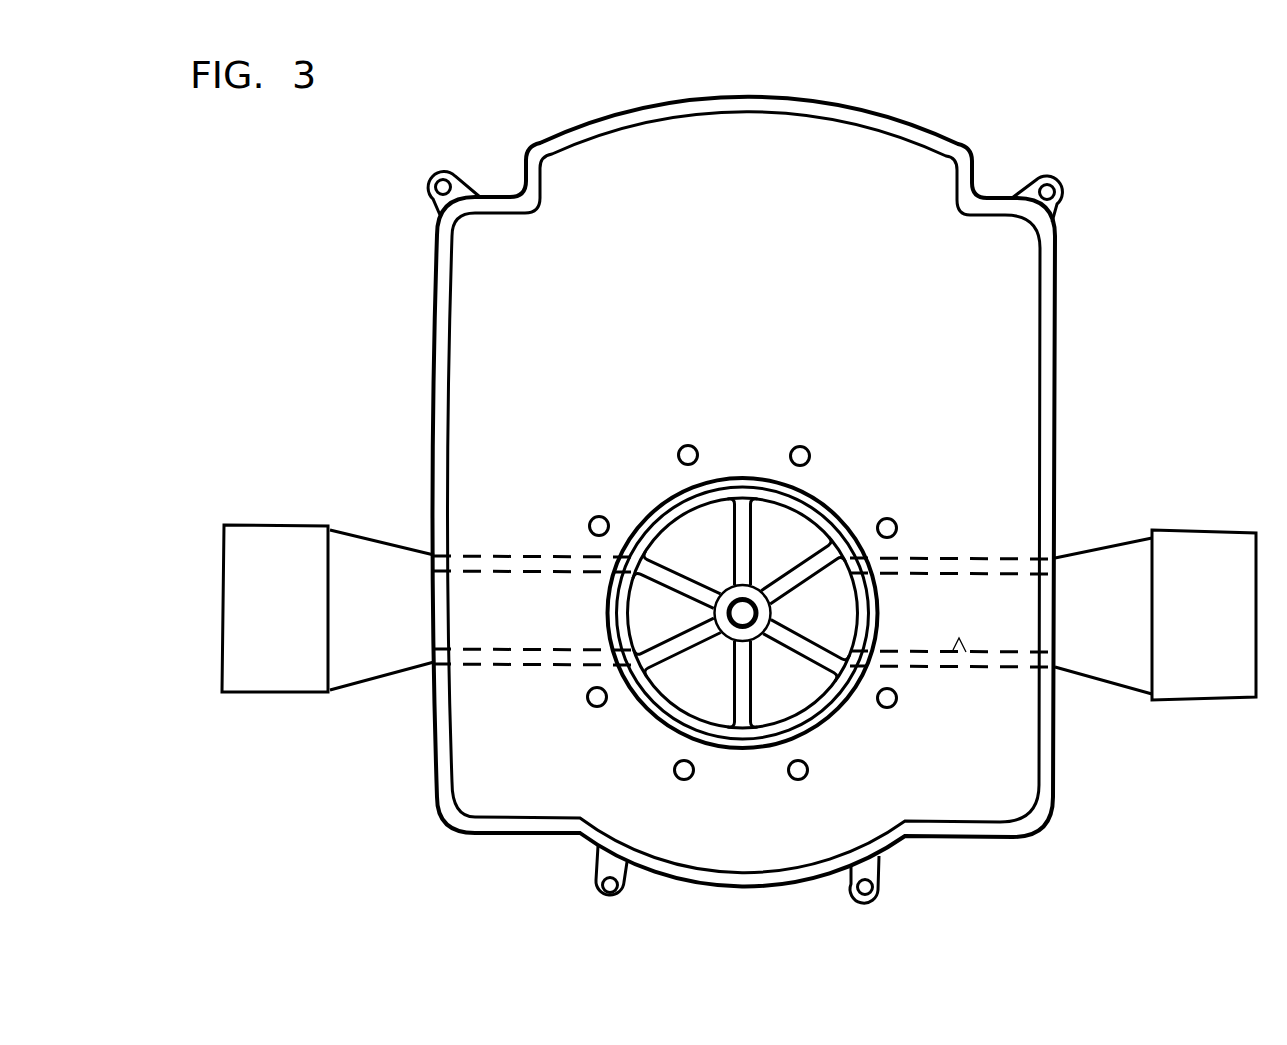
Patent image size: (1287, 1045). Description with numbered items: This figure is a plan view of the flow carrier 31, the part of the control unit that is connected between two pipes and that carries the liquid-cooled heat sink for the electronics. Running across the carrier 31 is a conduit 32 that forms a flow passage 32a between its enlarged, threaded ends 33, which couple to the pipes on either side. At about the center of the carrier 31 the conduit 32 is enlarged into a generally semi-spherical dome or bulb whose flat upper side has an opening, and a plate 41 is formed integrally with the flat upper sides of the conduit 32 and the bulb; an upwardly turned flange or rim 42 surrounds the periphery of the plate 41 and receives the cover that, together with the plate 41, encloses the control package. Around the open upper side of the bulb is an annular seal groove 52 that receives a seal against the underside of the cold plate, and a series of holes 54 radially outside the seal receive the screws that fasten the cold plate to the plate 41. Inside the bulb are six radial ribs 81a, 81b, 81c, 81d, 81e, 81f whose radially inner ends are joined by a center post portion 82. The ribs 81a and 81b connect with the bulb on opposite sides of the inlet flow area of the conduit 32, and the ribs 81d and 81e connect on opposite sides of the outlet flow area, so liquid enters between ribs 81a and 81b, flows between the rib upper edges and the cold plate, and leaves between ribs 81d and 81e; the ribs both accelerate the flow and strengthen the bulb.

The flow carrier 31 is at (366, 506).
The conduit 32 is at (983, 558).
The flow passage 32a is at (967, 662).
The ends 33 is at (270, 686).
The plate 41 is at (742, 297).
The flange or rim 42 is at (444, 362).
The annular seal groove 52 is at (741, 483).
The holes 54 is at (597, 515).
The radial rib 81a is at (802, 575).
The radial rib 81b is at (798, 643).
The radial rib 81c is at (748, 690).
The radial rib 81d is at (675, 652).
The radial rib 81e is at (672, 572).
The radial rib 81f is at (737, 547).
The center post portion 82 is at (748, 633).